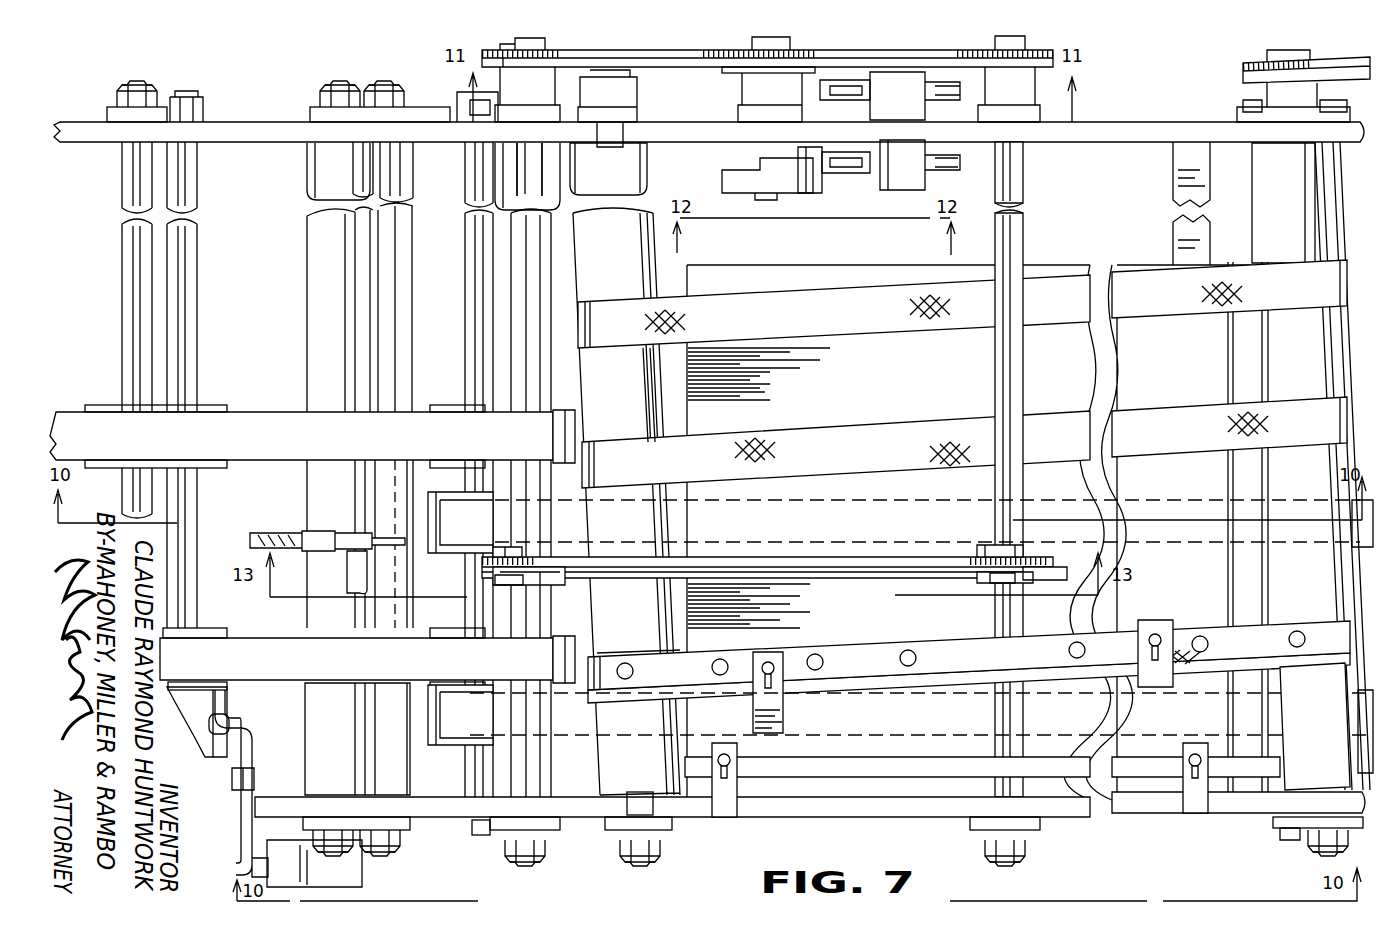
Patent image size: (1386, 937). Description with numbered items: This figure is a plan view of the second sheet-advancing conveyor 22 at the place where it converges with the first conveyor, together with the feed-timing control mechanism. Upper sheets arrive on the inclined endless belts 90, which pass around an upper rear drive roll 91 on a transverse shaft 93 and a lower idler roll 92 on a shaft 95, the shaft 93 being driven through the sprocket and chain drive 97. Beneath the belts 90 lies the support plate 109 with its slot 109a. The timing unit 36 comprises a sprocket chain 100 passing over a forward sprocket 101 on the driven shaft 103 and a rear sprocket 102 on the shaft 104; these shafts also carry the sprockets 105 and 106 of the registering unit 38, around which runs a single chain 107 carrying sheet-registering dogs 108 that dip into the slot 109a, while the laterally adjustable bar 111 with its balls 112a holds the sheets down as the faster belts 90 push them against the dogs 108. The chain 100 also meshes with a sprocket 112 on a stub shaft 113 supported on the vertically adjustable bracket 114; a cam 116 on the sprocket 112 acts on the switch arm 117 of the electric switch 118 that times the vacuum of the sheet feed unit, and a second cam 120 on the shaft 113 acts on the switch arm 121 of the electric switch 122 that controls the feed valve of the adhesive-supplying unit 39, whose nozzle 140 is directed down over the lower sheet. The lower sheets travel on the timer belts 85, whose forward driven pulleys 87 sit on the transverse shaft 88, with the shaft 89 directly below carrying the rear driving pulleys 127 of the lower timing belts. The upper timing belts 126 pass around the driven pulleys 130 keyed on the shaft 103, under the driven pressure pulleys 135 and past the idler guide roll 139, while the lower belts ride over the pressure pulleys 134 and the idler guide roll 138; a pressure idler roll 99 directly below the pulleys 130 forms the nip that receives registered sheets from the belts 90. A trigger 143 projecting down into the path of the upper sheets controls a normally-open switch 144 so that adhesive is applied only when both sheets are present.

The forward sprocket 101 is at (503, 45).
The sprocket chain 100 is at (642, 52).
The sprocket 112 is at (716, 55).
The electric switch 118 is at (893, 72).
The rear sprocket 102 is at (990, 47).
The timing unit 36 is at (1067, 45).
The sprocket and chain drive 97 is at (1348, 58).
The cam 116 is at (723, 72).
The bracket 114 is at (745, 112).
The switch arm 117 is at (833, 94).
The driven shaft 103 is at (537, 172).
The stub shaft 113 is at (765, 196).
The second cam 120 is at (795, 176).
The switch arm 121 is at (837, 176).
The electric switch 122 is at (905, 182).
The transverse shaft 88 is at (473, 251).
The pressure idler roll 99 is at (556, 251).
The shaft 104 is at (1014, 253).
The endless belts 90 is at (825, 297).
The upper and rear drive roll 91 is at (1277, 360).
The support plate 109 is at (767, 374).
The lower idler roll 92 is at (648, 415).
The driven pulleys 130 is at (570, 410).
The upper set of timing belts 126 is at (278, 422).
The rear driving pulleys 127 is at (448, 408).
The timer belts 85 is at (1113, 494).
The normally-open switch 144 is at (325, 533).
The trigger 143 is at (277, 541).
The sprocket 105 is at (548, 547).
The chain 107 is at (722, 555).
The registering unit 38 is at (801, 537).
The sprocket 106 is at (987, 547).
The forward driven pulleys 87 is at (453, 554).
The sheet-registering dogs 108 is at (523, 584).
The slot 109a is at (845, 590).
The driven pressure pulleys 135 is at (183, 683).
The driven pressure pulleys 134 is at (229, 710).
The idler guide roll 139 is at (357, 739).
The nozzle 140 is at (247, 760).
The balls 112a is at (720, 660).
The laterally adjustable bar 111 is at (962, 672).
The transverse shaft 89 is at (823, 766).
The sheet-advancing conveyor 22 is at (869, 797).
The transverse shaft 95 is at (655, 805).
The idler guide roll 138 is at (400, 792).
The adhesive-supplying unit 39 is at (378, 890).
The transverse shaft 93 is at (1317, 793).